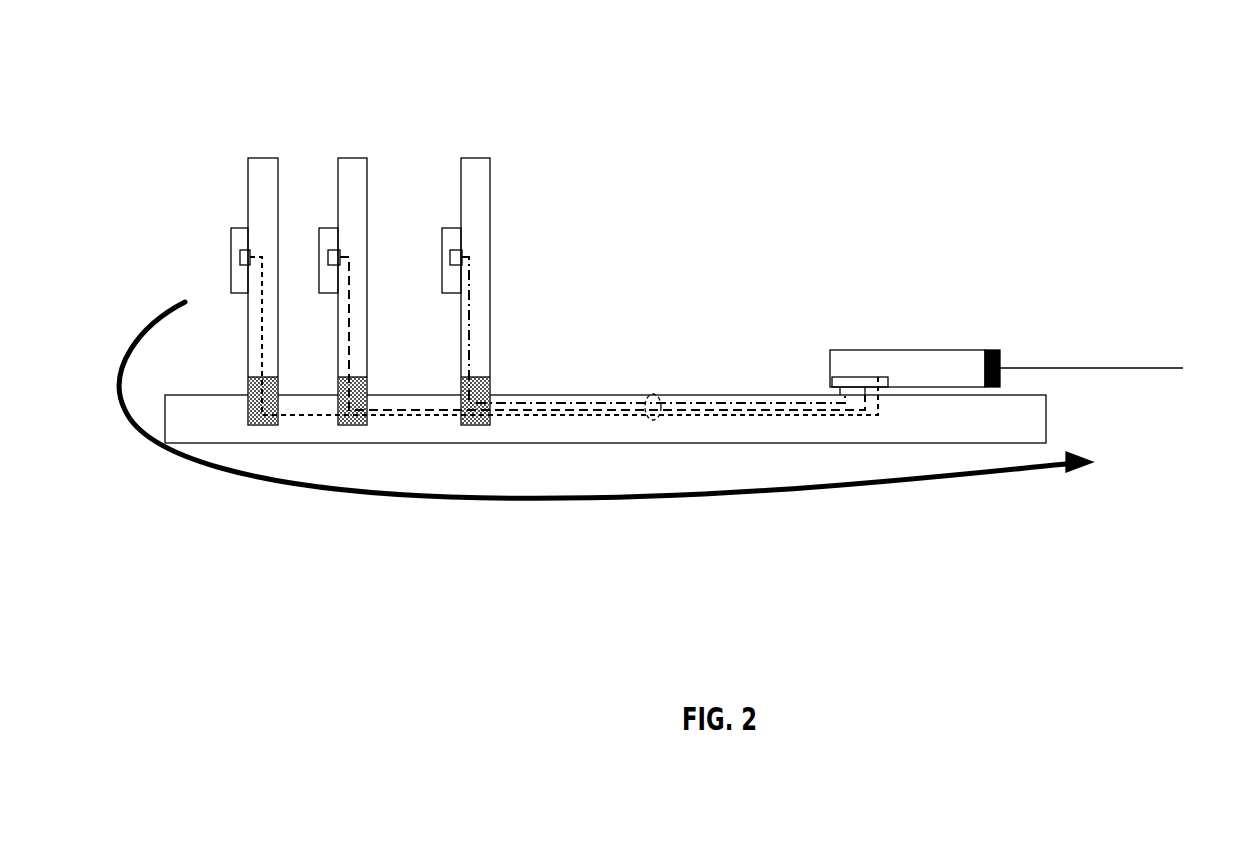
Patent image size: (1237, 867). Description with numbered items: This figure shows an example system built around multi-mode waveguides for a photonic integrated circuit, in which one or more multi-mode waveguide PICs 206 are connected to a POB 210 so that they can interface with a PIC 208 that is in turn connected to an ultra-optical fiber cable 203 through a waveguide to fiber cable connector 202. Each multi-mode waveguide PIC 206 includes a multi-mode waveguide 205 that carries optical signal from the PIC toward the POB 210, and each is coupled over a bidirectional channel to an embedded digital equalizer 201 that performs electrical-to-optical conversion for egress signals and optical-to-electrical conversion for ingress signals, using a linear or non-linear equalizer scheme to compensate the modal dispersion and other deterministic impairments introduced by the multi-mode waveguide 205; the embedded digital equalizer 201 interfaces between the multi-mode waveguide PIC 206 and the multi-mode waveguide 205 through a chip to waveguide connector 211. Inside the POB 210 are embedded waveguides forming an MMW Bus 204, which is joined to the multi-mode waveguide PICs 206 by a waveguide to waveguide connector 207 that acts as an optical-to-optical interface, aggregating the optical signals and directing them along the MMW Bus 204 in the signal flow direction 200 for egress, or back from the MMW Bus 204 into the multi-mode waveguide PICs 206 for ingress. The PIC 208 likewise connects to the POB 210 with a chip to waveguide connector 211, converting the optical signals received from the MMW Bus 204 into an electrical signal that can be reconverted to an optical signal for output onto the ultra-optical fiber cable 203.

The signal flow direction 200 is at (632, 400).
The embedded digital equalizer 201 is at (247, 228).
The waveguide to fiber cable connector 202 is at (998, 348).
The ultra-optical fiber cable 203 is at (1133, 368).
The MMW Bus 204 is at (650, 395).
The multi-mode waveguide 205 is at (468, 283).
The multi-mode waveguide PIC 206 is at (318, 243).
The waveguide to waveguide connector 207 is at (487, 383).
The PIC 208 is at (943, 348).
The POB 210 is at (987, 417).
The chip to waveguide connector 211 is at (243, 257).